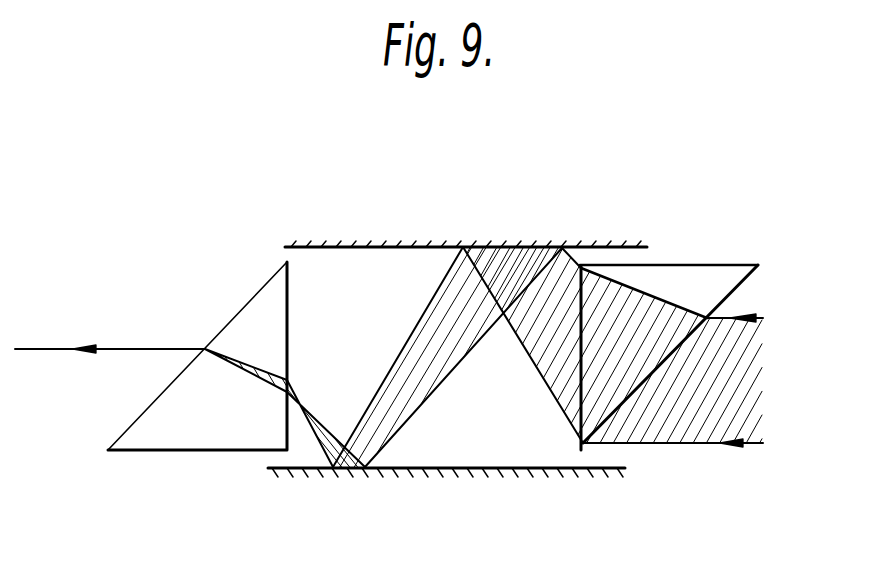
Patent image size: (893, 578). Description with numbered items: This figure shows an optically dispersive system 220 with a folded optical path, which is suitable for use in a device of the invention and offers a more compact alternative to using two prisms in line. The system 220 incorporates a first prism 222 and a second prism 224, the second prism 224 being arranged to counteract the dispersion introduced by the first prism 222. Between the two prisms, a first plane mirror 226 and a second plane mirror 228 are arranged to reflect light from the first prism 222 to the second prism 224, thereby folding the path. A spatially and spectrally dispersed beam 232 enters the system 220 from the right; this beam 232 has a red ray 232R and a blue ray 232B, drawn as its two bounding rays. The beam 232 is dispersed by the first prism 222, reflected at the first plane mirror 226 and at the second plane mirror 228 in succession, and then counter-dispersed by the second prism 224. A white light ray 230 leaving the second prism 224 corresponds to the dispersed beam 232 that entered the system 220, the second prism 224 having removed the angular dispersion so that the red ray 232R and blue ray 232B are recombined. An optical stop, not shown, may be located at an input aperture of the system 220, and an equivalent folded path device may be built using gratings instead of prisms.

The optically dispersive system 220 is at (254, 234).
The first prism 222 is at (703, 265).
The second prism 224 is at (185, 452).
The first plane mirror 226 is at (417, 242).
The second plane mirror 228 is at (473, 470).
The white light ray 230 is at (33, 353).
The spatially and spectrally dispersed beam 232 is at (722, 383).
The red ray 232R is at (757, 318).
The blue ray 232B is at (752, 446).